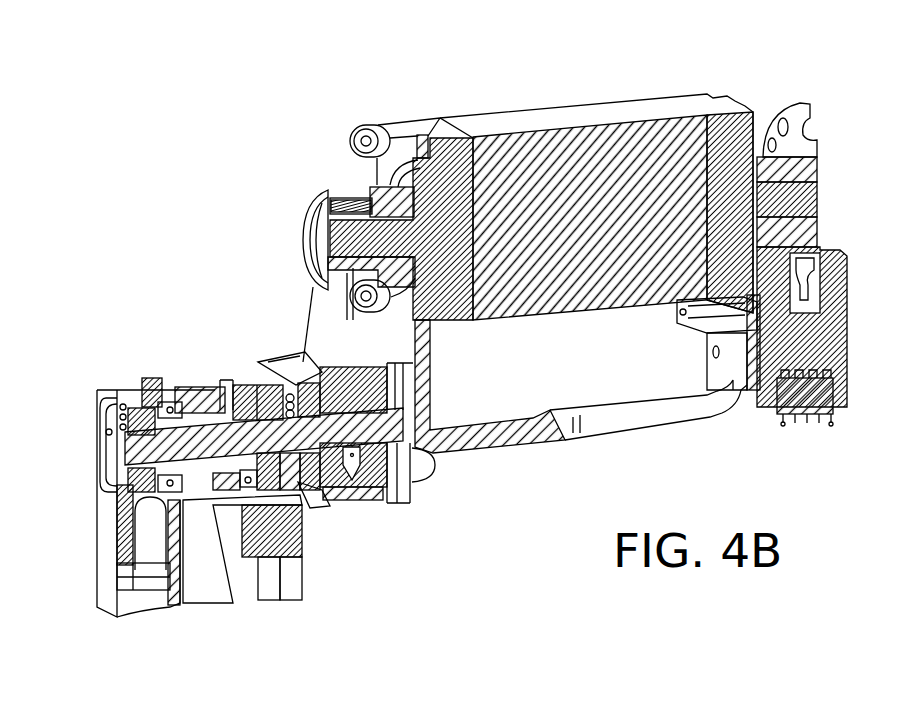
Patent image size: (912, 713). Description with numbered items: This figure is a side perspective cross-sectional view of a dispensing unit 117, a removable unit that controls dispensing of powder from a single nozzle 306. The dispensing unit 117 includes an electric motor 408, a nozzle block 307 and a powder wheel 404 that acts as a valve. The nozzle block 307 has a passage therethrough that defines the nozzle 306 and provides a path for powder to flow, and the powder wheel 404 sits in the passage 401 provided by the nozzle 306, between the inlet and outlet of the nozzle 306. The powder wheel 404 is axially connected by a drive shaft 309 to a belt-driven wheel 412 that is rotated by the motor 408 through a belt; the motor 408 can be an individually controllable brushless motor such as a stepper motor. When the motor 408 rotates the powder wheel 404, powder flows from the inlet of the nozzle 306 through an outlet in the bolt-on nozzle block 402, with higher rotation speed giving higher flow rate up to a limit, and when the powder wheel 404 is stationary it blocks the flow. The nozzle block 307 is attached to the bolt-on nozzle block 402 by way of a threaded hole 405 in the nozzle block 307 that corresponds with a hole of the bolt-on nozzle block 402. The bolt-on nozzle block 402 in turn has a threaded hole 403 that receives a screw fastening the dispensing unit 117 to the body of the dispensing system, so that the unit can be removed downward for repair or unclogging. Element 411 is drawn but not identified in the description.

The dispensing unit 117 is at (791, 49).
The electric motor 408 is at (648, 104).
The drive shaft 309 is at (318, 362).
The nozzle 306 is at (198, 393).
The powder wheel 404 is at (175, 448).
The nozzle block 307 is at (103, 517).
The passage 401 is at (200, 495).
The threaded hole 405 is at (138, 547).
The threaded hole 403 is at (273, 577).
The bolt-on nozzle block 402 is at (293, 588).
The retaining ring 411 is at (313, 490).
The belt-driven wheel 412 is at (405, 490).